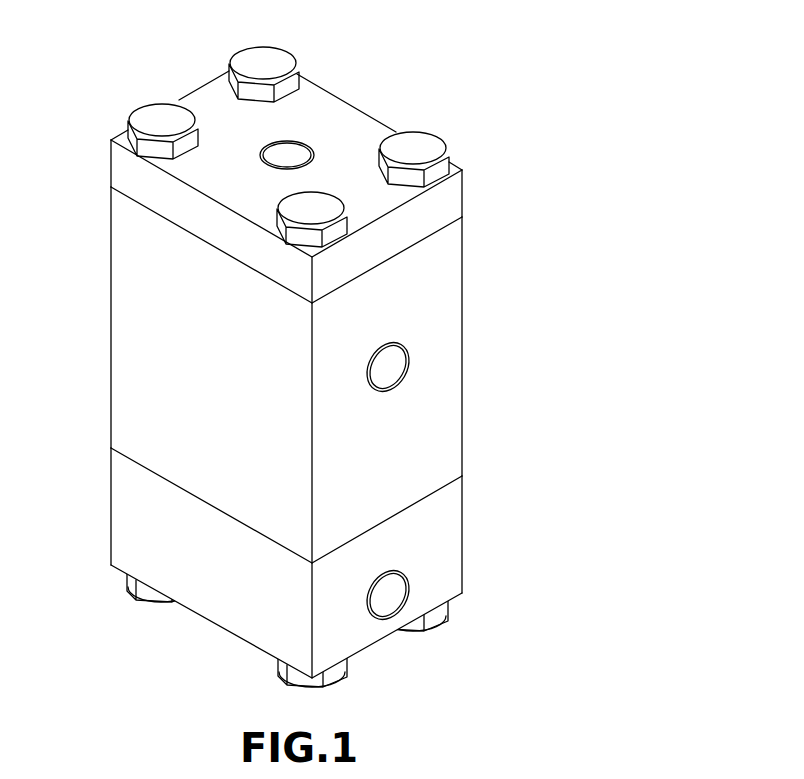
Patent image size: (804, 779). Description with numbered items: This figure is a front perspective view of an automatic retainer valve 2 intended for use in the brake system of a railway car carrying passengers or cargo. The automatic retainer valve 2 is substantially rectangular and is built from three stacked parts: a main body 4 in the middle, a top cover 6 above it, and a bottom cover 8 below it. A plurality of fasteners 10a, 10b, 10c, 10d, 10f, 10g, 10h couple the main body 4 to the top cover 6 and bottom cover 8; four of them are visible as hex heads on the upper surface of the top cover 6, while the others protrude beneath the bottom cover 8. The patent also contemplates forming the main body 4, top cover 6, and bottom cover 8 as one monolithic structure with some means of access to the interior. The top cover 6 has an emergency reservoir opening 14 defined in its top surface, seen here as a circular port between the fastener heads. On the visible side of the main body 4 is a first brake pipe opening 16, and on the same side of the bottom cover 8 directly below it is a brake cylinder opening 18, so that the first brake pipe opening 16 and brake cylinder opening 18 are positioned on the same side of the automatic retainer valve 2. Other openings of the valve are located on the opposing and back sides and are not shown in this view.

The automatic retainer valve 2 is at (540, 63).
The main body 4 is at (452, 277).
The top cover 6 is at (457, 190).
The bottom cover 8 is at (457, 568).
The fastener 10a is at (272, 56).
The fastener 10b is at (430, 144).
The fastener 10c is at (322, 203).
The fastener 10d is at (143, 118).
The fastener 10f is at (439, 617).
The fastener 10g is at (332, 675).
The fastener 10h is at (142, 593).
The emergency reservoir opening 14 is at (261, 152).
The first brake pipe opening 16 is at (404, 372).
The brake cylinder opening 18 is at (405, 580).